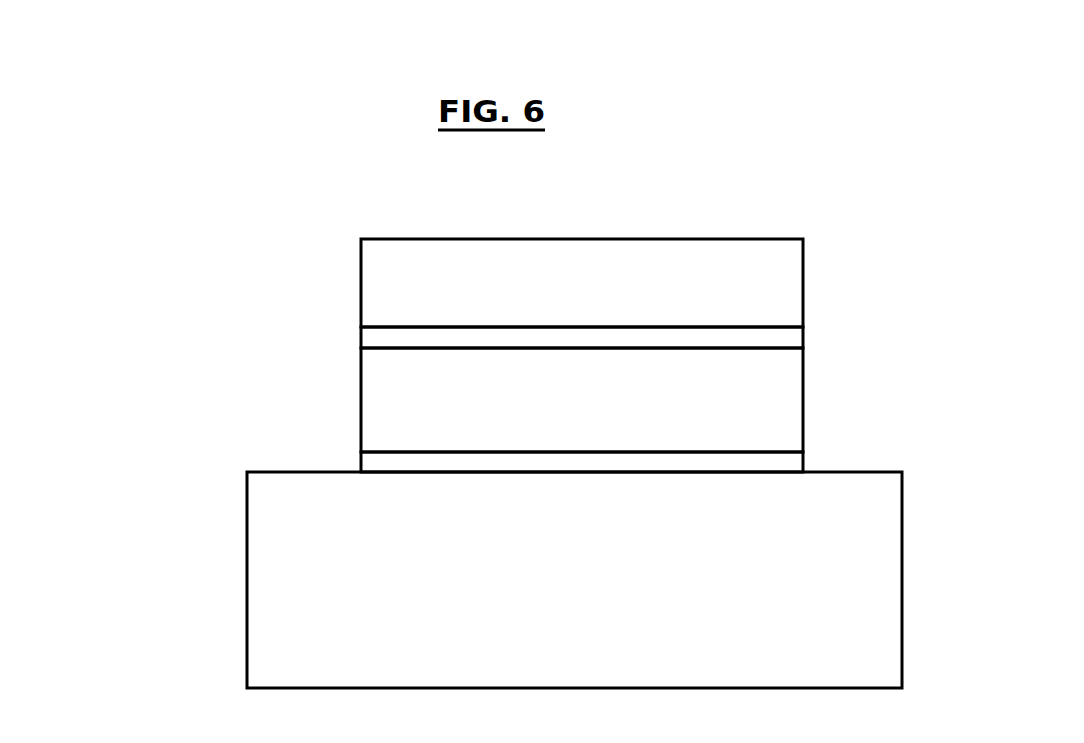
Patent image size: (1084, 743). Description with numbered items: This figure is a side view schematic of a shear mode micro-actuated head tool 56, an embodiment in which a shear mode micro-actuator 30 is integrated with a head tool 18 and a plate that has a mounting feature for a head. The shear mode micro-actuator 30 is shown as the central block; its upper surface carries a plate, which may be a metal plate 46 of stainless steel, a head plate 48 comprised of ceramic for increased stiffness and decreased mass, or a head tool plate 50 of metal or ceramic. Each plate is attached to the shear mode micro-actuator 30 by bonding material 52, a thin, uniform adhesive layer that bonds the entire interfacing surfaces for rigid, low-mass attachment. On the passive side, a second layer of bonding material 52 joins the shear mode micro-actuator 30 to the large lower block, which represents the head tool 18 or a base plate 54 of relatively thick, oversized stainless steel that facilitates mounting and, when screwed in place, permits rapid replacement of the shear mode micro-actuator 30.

The shear mode micro-actuated head tool 56 is at (848, 199).
The head tool 18 is at (475, 580).
The base plate 54 is at (303, 600).
The shear mode micro-actuator 30 is at (765, 397).
The bonding material 52 is at (396, 337).
The metal plate 46 is at (455, 283).
The head plate 48 is at (455, 283).
The head tool plate 50 is at (395, 283).